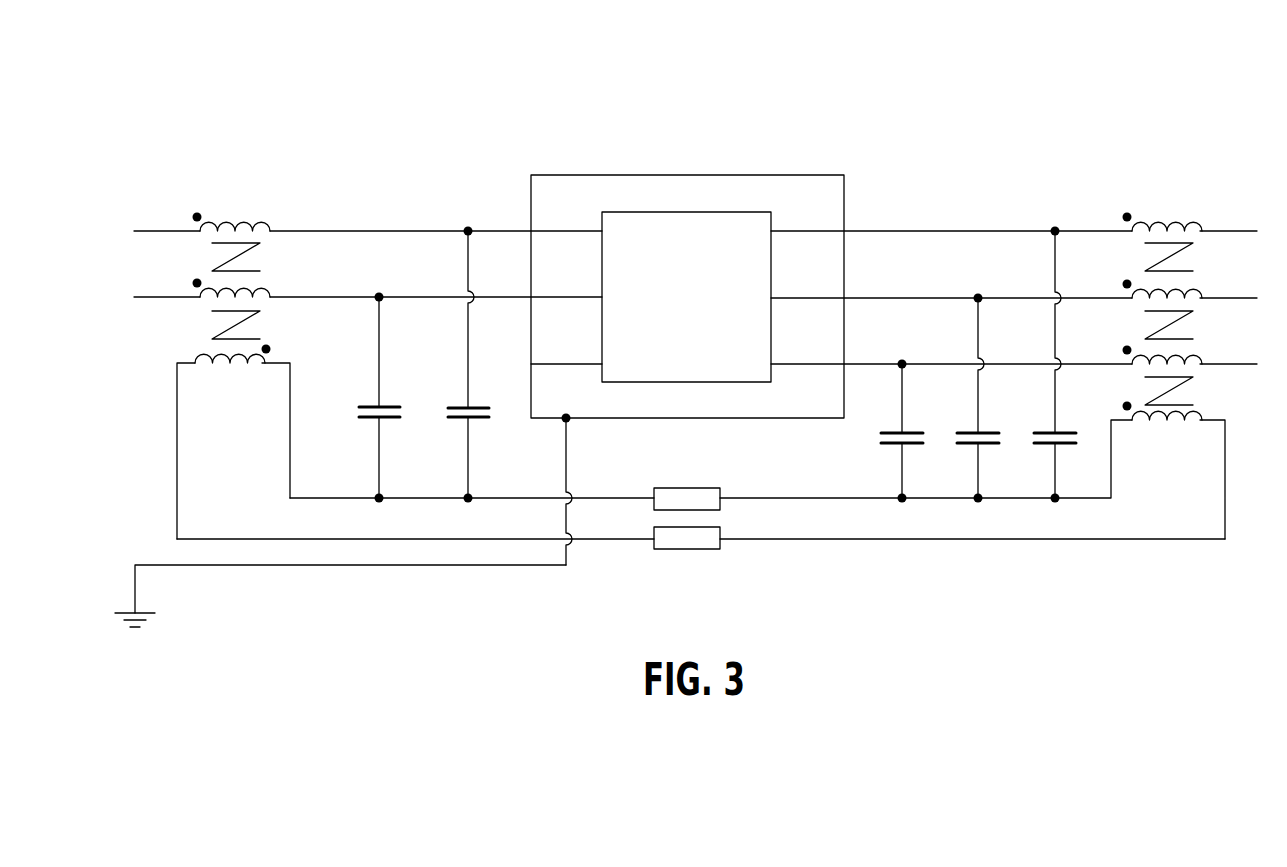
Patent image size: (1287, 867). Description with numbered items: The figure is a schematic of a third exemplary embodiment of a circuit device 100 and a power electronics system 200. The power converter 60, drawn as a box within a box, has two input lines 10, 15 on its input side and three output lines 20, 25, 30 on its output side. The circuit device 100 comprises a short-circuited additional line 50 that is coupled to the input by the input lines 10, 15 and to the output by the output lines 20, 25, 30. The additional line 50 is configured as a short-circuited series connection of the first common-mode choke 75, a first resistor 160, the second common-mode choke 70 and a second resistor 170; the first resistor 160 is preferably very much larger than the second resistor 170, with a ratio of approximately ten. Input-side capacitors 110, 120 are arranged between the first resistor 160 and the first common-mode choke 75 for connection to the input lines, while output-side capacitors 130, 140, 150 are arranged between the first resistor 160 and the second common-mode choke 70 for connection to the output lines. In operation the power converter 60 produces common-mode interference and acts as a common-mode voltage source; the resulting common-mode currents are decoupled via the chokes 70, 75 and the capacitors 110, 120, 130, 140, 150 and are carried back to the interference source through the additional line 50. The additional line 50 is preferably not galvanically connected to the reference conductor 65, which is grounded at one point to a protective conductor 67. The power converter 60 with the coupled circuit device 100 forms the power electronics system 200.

The circuit device 100 is at (686, 342).
The power electronics system 200 is at (285, 133).
The input line 10 is at (517, 230).
The input line 15 is at (510, 297).
The output line 20 is at (880, 230).
The output line 25 is at (887, 296).
The output line 30 is at (876, 362).
The additional line 50 is at (250, 538).
The power converter 60 is at (785, 186).
The reference conductor 65 is at (148, 563).
The protective conductor 67 is at (135, 590).
The second common-mode choke 70 is at (1150, 425).
The first common-mode choke 75 is at (195, 363).
The input-side capacitor 110 is at (364, 405).
The input-side capacitor 120 is at (452, 406).
The output-side capacitor 130 is at (893, 431).
The output-side capacitor 140 is at (965, 431).
The output-side capacitor 150 is at (1043, 431).
The first resistor 160 is at (690, 493).
The second resistor 170 is at (683, 543).